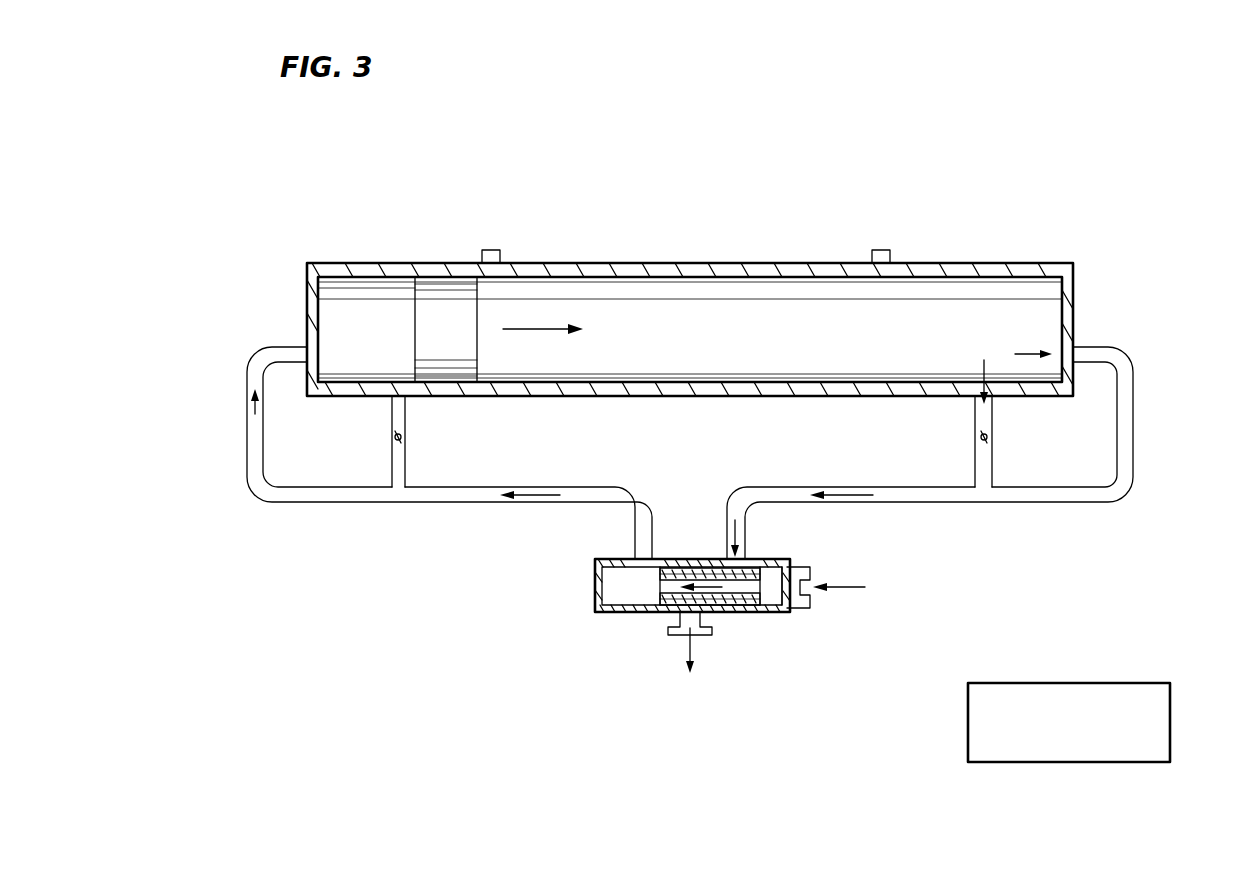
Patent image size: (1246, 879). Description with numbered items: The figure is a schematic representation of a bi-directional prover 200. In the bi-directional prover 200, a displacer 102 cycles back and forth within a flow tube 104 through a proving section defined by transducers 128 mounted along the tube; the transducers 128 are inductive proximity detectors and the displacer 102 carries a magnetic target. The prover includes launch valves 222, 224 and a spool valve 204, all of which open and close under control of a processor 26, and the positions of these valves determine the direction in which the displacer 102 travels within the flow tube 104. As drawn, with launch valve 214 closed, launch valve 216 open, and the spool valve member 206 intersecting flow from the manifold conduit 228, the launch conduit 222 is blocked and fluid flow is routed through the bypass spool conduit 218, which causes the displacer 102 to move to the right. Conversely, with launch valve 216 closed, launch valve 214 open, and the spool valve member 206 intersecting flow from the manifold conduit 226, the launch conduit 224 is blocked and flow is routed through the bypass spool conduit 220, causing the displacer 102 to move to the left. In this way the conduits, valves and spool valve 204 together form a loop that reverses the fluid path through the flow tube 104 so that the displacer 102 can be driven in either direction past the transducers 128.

The processor 26 is at (1102, 683).
The displacer 102 is at (438, 303).
The flow tube 104 is at (690, 265).
The transducers 128 is at (490, 250).
The bi-directional prover 200 is at (1024, 126).
The spool valve 204 is at (580, 604).
The spool valve member 206 is at (735, 606).
The launch valve 214 is at (399, 440).
The launch valve 216 is at (990, 447).
The bypass spool conduit 218 is at (247, 437).
The bypass spool conduit 220 is at (1135, 428).
The launch conduit 222 is at (390, 407).
The launch conduit 224 is at (978, 468).
The manifold conduit 226 is at (453, 502).
The manifold conduit 228 is at (944, 498).